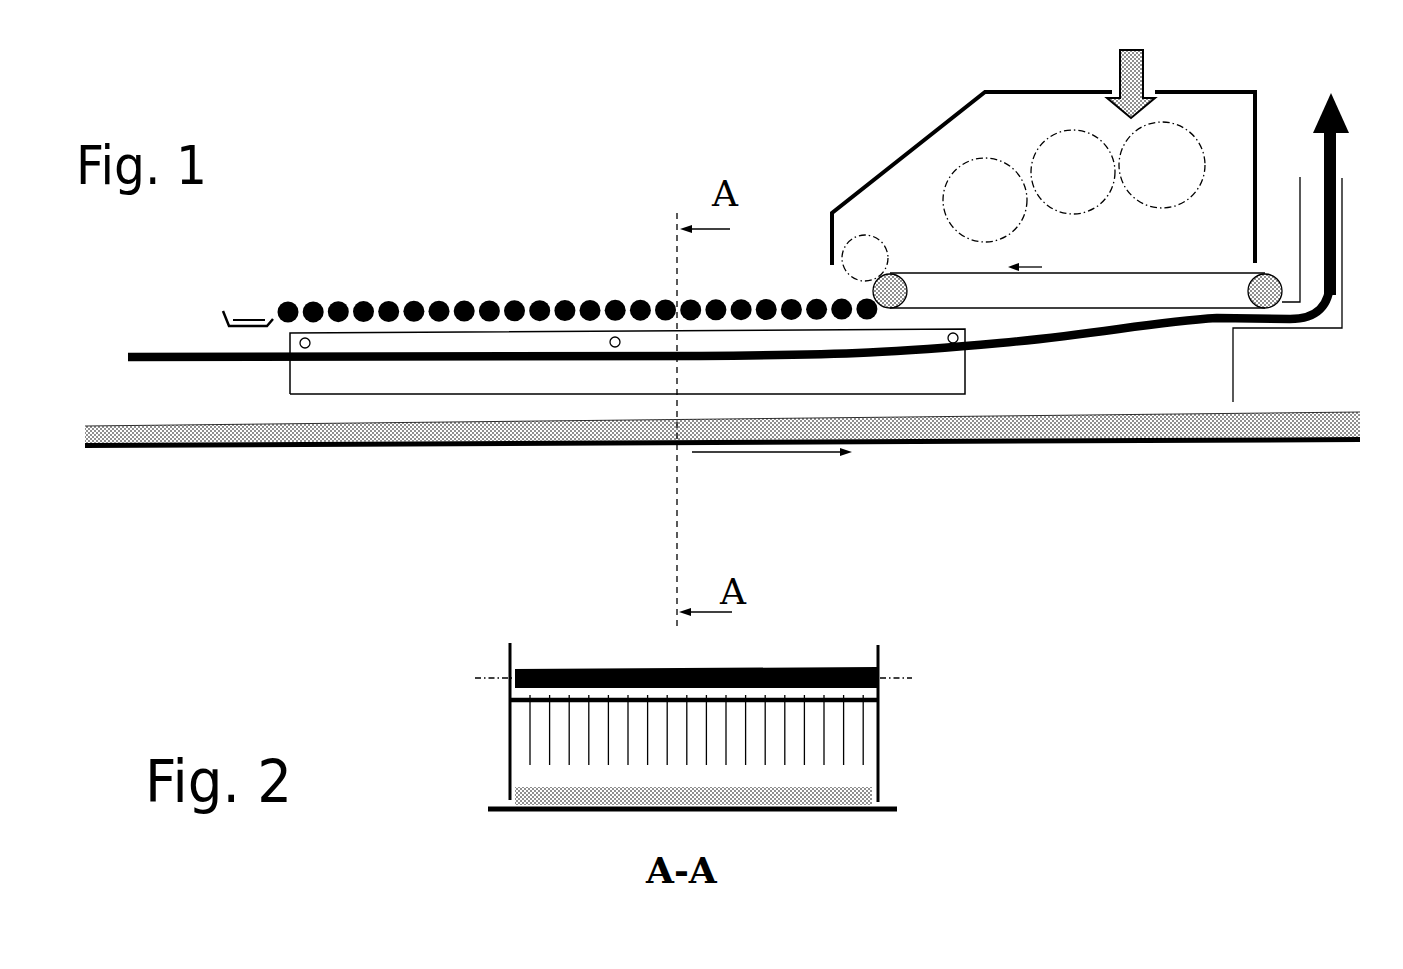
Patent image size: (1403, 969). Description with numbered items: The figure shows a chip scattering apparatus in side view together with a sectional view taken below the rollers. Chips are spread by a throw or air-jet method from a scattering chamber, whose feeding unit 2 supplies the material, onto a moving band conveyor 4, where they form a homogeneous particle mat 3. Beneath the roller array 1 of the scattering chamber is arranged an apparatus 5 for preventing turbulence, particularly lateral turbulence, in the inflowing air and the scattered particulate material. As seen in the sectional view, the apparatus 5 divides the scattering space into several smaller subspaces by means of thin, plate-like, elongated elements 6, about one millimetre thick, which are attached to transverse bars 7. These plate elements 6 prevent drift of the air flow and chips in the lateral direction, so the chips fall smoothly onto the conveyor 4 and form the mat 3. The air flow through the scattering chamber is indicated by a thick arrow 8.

In FIG. 1, the roller array 1 is at (422, 282).
In FIG. 2, the roller array 1 is at (832, 667).
In FIG. 1, the particle feeding device 2 is at (938, 148).
In FIG. 1, the mat 3 is at (1082, 420).
In FIG. 2, the mat 3 is at (860, 794).
In FIG. 1, the band conveyor 4 is at (1007, 445).
In FIG. 2, the band conveyor 4 is at (822, 814).
In FIG. 1, the apparatus for preventing turbulence 5 is at (298, 378).
In FIG. 2, the apparatus for preventing turbulence 5 is at (510, 737).
In FIG. 2, the plate-like elements 6 is at (535, 752).
In FIG. 1, the transverse bars 7 is at (311, 343).
In FIG. 2, the transverse bars 7 is at (517, 707).
In FIG. 1, the thick arrow 8 is at (1337, 148).